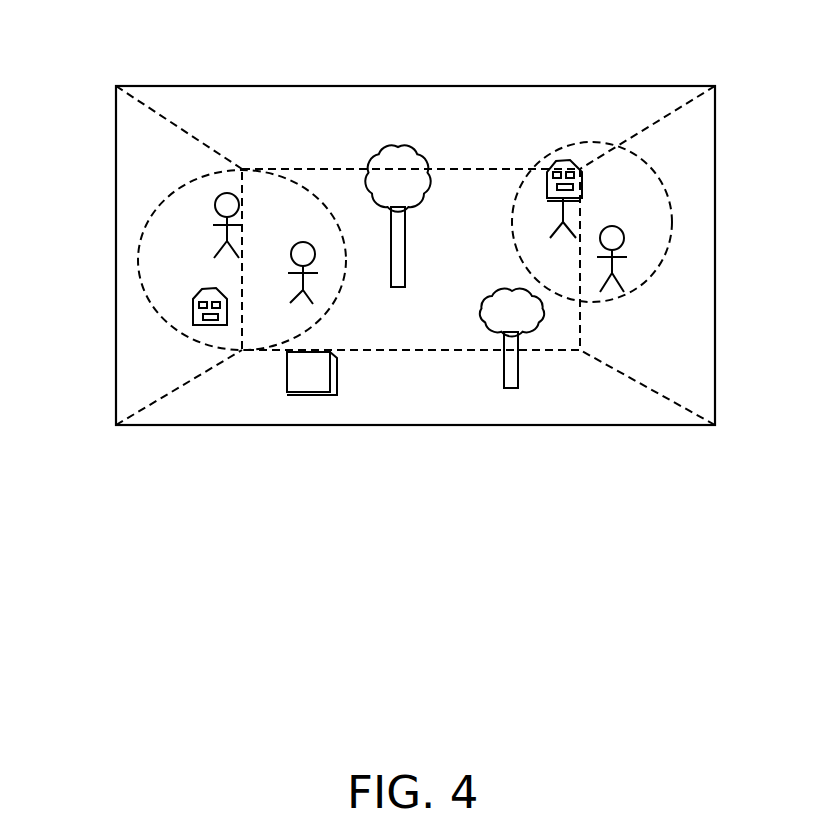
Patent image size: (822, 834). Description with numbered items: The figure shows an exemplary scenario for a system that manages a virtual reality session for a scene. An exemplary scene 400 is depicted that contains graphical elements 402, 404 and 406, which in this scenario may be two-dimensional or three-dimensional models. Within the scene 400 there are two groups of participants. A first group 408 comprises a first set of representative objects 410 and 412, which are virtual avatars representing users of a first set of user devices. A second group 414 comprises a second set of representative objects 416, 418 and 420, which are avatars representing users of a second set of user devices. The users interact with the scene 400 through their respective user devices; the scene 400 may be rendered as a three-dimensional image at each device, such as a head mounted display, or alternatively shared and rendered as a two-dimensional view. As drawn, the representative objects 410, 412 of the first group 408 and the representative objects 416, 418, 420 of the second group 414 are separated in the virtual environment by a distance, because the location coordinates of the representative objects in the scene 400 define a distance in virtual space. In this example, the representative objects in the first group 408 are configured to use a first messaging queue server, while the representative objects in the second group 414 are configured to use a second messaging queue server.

The exemplary scene 400 is at (415, 219).
The graphical element 402 is at (397, 150).
The graphical element 404 is at (507, 203).
The graphical element 406 is at (293, 422).
The first group 408 is at (592, 160).
The representative object 410 is at (619, 129).
The representative object 412 is at (688, 220).
The second group 414 is at (219, 191).
The representative object 416 is at (135, 220).
The representative object 418 is at (129, 299).
The representative object 420 is at (172, 341).